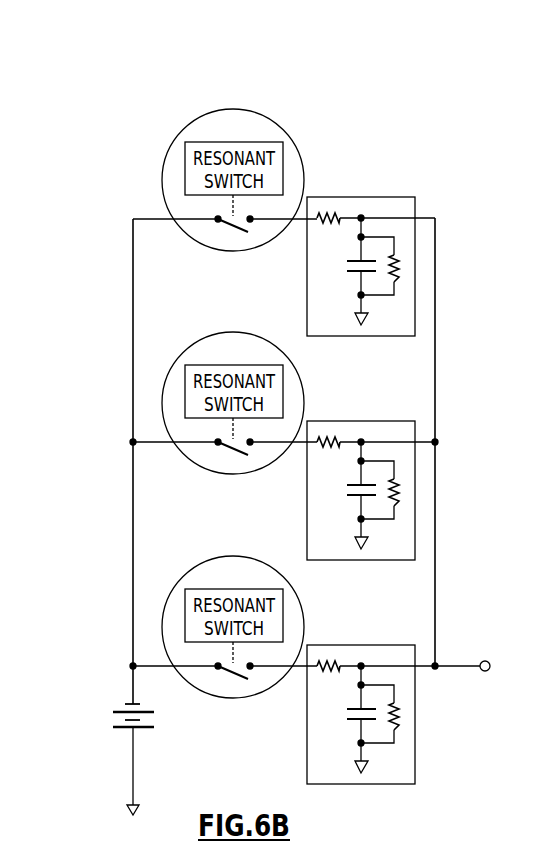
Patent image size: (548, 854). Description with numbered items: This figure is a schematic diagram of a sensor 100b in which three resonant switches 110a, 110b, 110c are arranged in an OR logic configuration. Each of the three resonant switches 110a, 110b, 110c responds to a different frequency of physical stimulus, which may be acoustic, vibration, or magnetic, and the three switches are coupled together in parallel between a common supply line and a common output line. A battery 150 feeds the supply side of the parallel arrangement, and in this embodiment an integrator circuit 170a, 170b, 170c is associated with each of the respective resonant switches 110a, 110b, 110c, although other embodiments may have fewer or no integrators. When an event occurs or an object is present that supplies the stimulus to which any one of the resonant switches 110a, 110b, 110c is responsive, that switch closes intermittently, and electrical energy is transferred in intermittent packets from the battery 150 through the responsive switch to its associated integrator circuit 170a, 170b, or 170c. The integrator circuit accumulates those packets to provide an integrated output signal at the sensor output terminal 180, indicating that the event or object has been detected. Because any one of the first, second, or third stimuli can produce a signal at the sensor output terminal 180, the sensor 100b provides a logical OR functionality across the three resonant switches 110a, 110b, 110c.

The sensor 100b is at (310, 372).
The resonant switch 110a is at (205, 109).
The resonant switch 110b is at (205, 332).
The resonant switch 110c is at (205, 556).
The integrator circuit 170a is at (355, 197).
The integrator circuit 170b is at (355, 421).
The integrator circuit 170c is at (355, 645).
The battery 150 is at (120, 703).
The sensor output terminal 180 is at (487, 671).